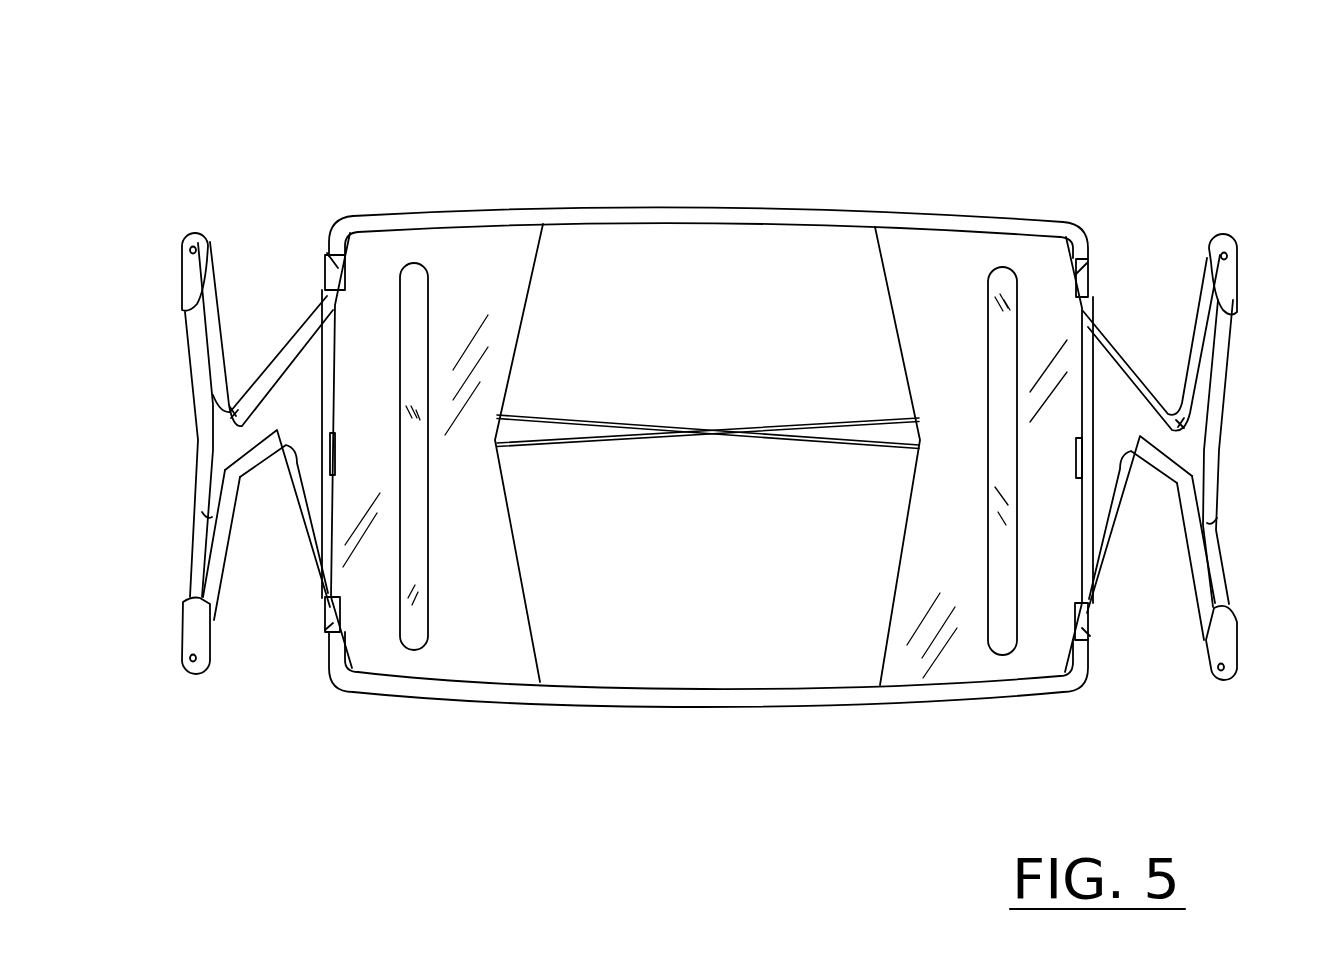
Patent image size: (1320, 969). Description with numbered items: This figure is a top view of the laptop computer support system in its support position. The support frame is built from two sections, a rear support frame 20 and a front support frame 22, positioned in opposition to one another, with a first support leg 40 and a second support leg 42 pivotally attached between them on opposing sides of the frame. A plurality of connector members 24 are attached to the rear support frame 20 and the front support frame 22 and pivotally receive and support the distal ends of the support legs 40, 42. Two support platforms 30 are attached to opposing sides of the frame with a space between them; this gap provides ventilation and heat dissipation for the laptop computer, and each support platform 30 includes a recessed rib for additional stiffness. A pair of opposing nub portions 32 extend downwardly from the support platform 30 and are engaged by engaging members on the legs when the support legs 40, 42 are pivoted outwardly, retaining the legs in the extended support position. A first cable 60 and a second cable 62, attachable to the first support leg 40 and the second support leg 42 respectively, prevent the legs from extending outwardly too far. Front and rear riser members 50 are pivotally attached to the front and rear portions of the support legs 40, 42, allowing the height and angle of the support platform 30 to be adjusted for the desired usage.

The rear support frame 20 is at (709, 217).
The front support frame 22 is at (648, 694).
The connector members 24 is at (332, 262).
The support platform 30 is at (457, 633).
The nub portions 32 is at (333, 458).
The first support leg 40 is at (1147, 387).
The second support leg 42 is at (264, 388).
The riser members 50 is at (188, 270).
The first cable 60 is at (835, 422).
The second cable 62 is at (548, 417).